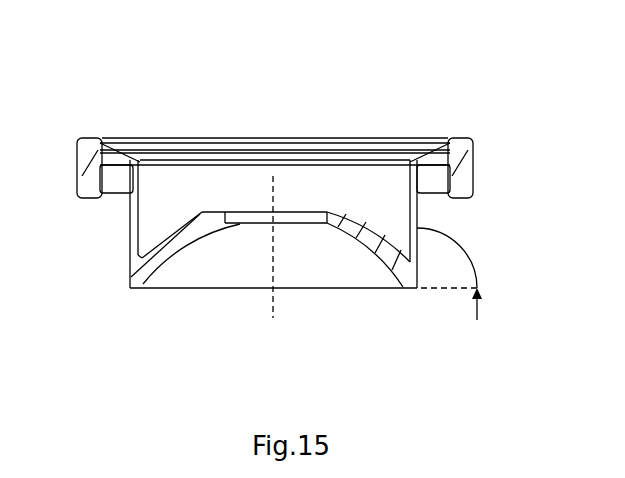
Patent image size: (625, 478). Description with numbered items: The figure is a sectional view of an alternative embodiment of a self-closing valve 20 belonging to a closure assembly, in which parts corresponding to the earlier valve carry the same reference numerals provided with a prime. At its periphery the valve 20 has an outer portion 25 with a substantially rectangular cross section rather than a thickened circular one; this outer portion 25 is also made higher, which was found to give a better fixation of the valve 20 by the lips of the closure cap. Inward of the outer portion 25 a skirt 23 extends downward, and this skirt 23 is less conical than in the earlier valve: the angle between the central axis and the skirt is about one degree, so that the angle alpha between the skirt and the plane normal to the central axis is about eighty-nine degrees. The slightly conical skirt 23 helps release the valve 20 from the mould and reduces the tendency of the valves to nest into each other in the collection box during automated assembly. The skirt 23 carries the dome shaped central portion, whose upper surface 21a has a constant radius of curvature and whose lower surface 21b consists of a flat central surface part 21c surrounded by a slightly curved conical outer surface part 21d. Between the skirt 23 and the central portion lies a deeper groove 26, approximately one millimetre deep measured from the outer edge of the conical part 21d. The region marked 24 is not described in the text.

The self-closing valve 20 is at (292, 191).
The upper surface of the dome shaped central portion 21a is at (209, 242).
The lower surface of the dome shaped central portion 21b is at (319, 195).
The flat central surface part 21c is at (241, 205).
The conical outer surface part 21d is at (362, 220).
The skirt 23 is at (128, 223).
The inner edge region 24 is at (436, 166).
The outer portion 25 is at (458, 155).
The groove 26 is at (150, 240).